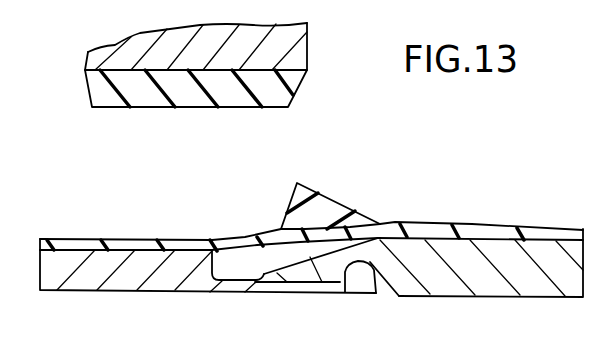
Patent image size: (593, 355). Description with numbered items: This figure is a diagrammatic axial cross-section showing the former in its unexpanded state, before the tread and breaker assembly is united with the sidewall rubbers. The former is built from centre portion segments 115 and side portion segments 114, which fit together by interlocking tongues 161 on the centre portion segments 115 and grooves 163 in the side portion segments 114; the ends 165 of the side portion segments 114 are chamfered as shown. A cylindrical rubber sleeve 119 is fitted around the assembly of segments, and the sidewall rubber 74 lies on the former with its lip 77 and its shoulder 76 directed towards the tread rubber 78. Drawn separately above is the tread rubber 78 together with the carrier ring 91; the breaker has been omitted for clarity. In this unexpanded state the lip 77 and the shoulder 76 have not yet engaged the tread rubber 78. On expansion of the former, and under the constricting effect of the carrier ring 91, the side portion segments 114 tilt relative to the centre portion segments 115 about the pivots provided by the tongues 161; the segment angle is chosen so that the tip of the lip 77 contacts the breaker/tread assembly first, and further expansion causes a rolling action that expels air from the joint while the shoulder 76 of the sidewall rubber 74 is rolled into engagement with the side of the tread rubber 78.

The carrier ring 91 is at (302, 37).
The tread rubber 78 is at (297, 82).
The shoulder 76 is at (286, 204).
The lip 77 is at (264, 232).
The sidewall rubber 74 is at (403, 223).
The cylindrical rubber sleeve 119 is at (127, 244).
The centre portion segments 115 is at (85, 280).
The side portion segments 114 is at (537, 288).
The ends 165 is at (298, 272).
The tongues 161 is at (353, 273).
The grooves 163 is at (402, 296).